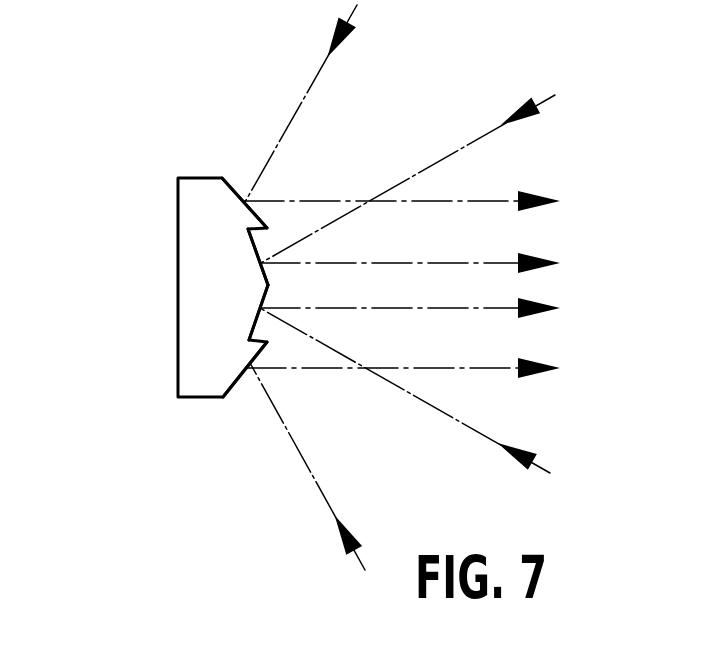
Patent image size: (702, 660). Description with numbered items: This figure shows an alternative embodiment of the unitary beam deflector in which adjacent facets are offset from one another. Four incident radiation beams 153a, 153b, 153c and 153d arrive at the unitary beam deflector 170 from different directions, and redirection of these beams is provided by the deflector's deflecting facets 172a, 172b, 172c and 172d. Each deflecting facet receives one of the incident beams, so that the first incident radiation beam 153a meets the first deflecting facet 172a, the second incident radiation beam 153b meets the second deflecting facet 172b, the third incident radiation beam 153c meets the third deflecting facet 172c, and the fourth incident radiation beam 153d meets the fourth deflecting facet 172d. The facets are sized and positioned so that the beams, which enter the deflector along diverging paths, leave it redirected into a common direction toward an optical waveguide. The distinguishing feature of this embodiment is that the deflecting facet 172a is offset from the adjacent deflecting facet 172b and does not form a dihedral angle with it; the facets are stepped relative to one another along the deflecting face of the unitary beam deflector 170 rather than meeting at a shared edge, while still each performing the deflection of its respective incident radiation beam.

The unitary beam deflector 170 is at (178, 204).
The deflecting facet 172a is at (232, 187).
The deflecting facet 172b is at (256, 248).
The deflecting facet 172c is at (254, 330).
The deflecting facet 172d is at (236, 386).
The incident radiation beam 153a is at (299, 113).
The incident radiation beam 153b is at (454, 147).
The incident radiation beam 153c is at (491, 433).
The incident radiation beam 153d is at (304, 461).